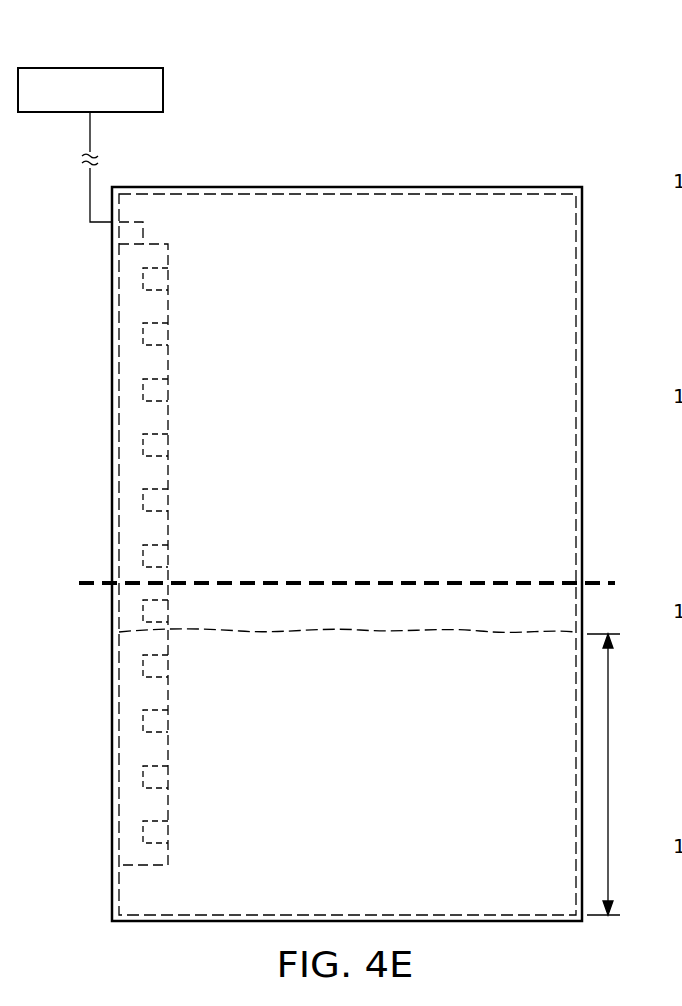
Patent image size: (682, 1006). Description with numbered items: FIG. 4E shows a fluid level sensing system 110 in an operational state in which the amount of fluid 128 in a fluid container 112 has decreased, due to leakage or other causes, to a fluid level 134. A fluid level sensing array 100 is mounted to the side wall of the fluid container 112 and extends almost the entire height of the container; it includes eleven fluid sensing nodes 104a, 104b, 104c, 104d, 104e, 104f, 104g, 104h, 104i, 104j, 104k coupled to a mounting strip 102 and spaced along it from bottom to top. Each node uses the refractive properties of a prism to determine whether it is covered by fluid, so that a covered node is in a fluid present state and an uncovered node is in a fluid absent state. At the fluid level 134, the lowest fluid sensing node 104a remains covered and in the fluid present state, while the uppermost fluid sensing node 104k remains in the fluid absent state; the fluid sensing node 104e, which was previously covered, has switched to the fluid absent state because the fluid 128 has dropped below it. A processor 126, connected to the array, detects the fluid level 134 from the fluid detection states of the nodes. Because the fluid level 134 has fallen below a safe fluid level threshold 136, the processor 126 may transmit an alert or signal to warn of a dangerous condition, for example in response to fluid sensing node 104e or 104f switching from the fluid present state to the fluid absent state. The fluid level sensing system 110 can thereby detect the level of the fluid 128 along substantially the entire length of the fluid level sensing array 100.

The fluid level sensing array 100 is at (167, 259).
The mounting strip 102 is at (169, 313).
The fluid sensing node 104a is at (143, 823).
The fluid sensing node 104b is at (143, 768).
The fluid sensing node 104c is at (143, 712).
The fluid sensing node 104d is at (143, 657).
The fluid sensing node 104e is at (143, 602).
The fluid sensing node 104f is at (143, 564).
The fluid sensing node 104g is at (143, 508).
The fluid sensing node 104h is at (143, 453).
The fluid sensing node 104i is at (143, 398).
The fluid sensing node 104j is at (143, 342).
The fluid sensing node 104k is at (143, 287).
The fluid level sensing system 110 is at (452, 147).
The fluid container 112 is at (280, 187).
The processor 126 is at (90, 68).
The fluid 128 is at (413, 629).
The fluid level 134 is at (609, 776).
The safe fluid level threshold 136 is at (605, 582).